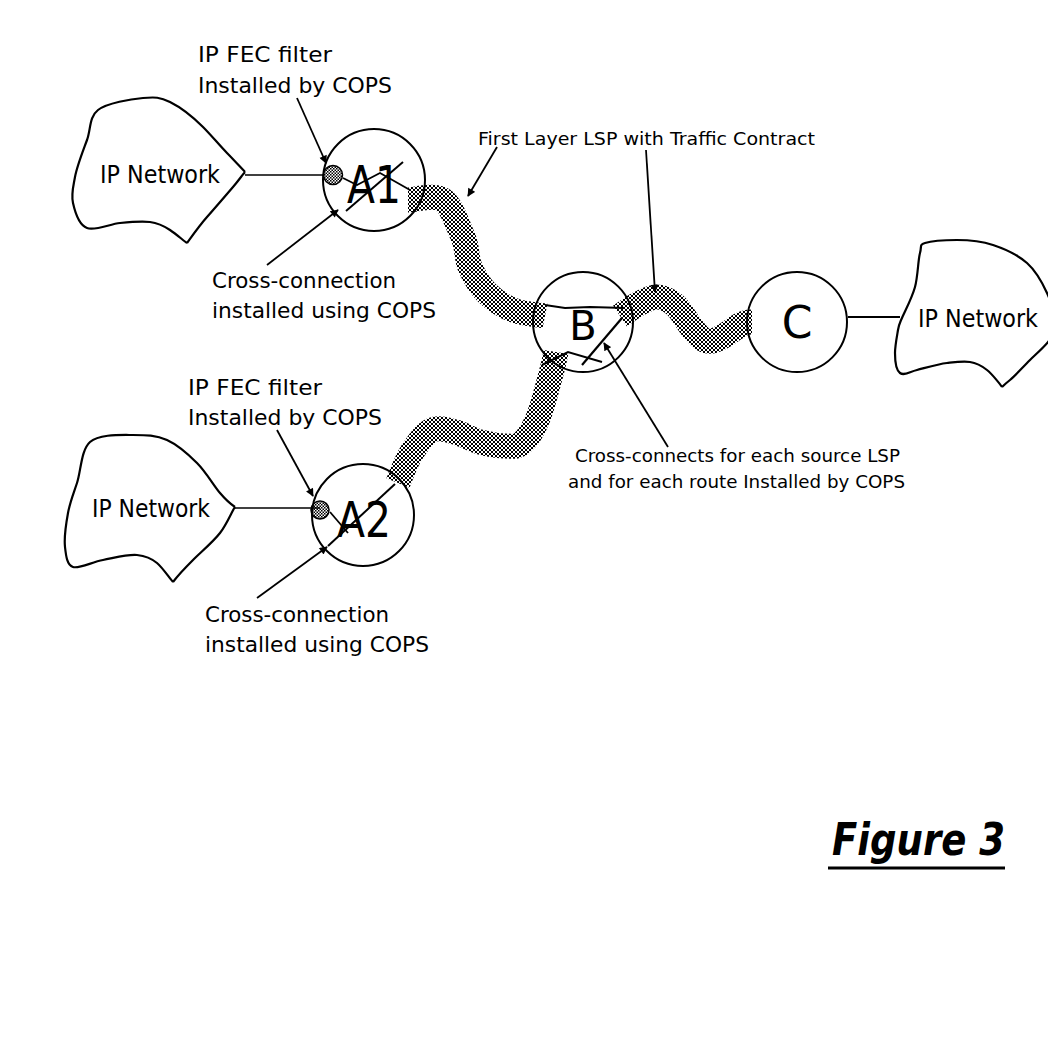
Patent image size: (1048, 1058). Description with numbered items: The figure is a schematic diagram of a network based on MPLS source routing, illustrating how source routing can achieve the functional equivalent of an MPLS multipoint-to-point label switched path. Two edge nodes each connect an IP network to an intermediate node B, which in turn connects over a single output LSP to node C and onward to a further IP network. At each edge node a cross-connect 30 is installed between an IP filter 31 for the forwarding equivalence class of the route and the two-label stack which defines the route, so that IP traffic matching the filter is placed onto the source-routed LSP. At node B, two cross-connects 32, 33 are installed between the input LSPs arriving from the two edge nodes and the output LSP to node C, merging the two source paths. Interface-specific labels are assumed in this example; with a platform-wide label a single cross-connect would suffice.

The cross-connect 30 is at (400, 181).
The IP filter 31 is at (323, 178).
The cross-connect 32 is at (557, 308).
The cross-connect 33 is at (622, 321).